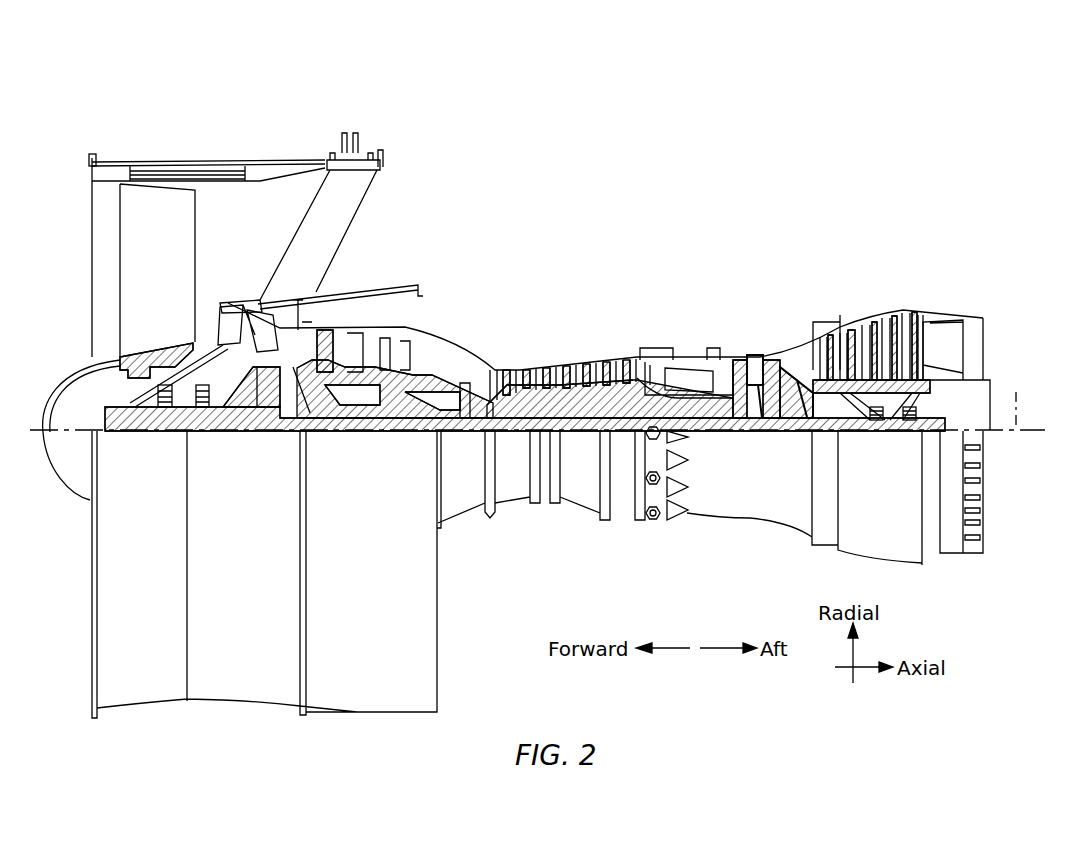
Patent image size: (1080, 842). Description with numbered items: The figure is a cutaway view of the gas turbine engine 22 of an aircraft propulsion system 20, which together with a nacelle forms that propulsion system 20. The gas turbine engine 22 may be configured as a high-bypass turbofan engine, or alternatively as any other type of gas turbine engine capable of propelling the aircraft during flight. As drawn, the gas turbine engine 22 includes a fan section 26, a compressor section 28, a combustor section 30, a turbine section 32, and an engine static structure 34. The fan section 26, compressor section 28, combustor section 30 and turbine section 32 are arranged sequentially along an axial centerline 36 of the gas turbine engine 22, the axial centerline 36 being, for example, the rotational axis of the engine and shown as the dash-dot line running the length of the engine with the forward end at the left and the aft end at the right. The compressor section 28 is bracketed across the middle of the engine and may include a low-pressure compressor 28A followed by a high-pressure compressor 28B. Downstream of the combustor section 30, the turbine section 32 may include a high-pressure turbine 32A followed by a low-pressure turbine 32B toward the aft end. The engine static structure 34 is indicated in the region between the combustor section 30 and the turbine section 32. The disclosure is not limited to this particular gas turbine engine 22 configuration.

The propulsion system 20 is at (888, 192).
The gas turbine engine 22 is at (925, 297).
The fan section 26 is at (307, 148).
The compressor section 28 is at (647, 260).
The low-pressure compressor 28A is at (407, 327).
The high-pressure compressor 28B is at (582, 358).
The combustor section 30 is at (739, 260).
The turbine section 32 is at (938, 262).
The high-pressure turbine 32A is at (748, 347).
The low-pressure turbine 32B is at (885, 307).
The engine static structure 34 is at (793, 350).
The axial centerline 36 is at (1016, 392).